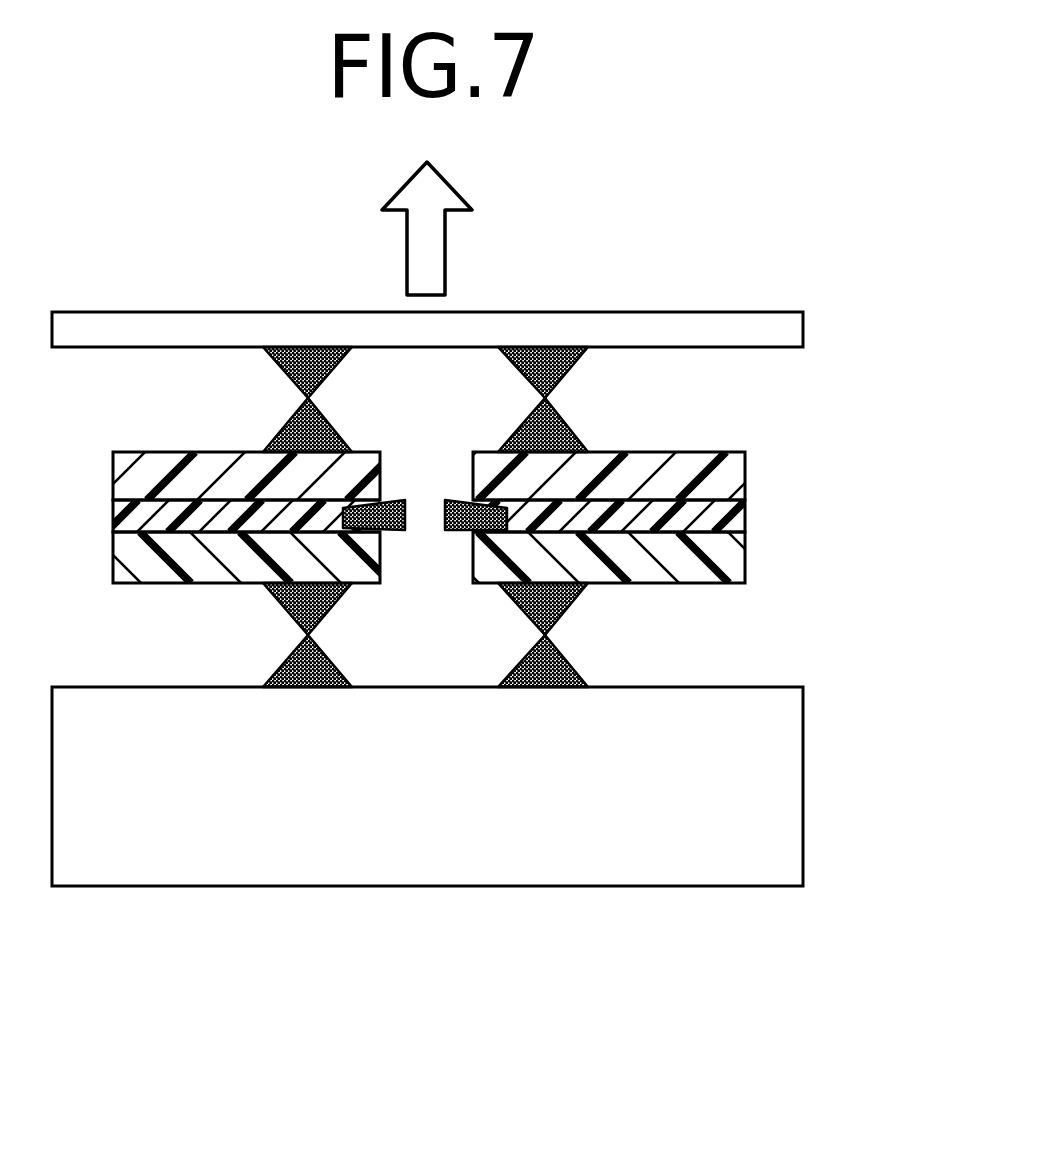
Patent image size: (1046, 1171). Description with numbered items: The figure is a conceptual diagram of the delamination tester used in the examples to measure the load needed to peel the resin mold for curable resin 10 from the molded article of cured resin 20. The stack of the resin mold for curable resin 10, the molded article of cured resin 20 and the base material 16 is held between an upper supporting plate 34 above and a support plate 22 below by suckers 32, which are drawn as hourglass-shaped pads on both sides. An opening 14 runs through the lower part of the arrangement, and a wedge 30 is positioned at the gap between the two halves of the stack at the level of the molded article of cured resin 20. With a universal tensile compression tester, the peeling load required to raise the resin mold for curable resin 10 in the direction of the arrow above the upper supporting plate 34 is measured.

The resin mold for curable resin 10 is at (727, 470).
The molded article of cured resin 20 is at (725, 512).
The base material 16 is at (725, 560).
The opening 14 is at (437, 555).
The support plate 22 is at (760, 797).
The wedge 30 is at (400, 507).
The sucker 32 is at (576, 378).
The upper supporting plate 34 is at (803, 324).